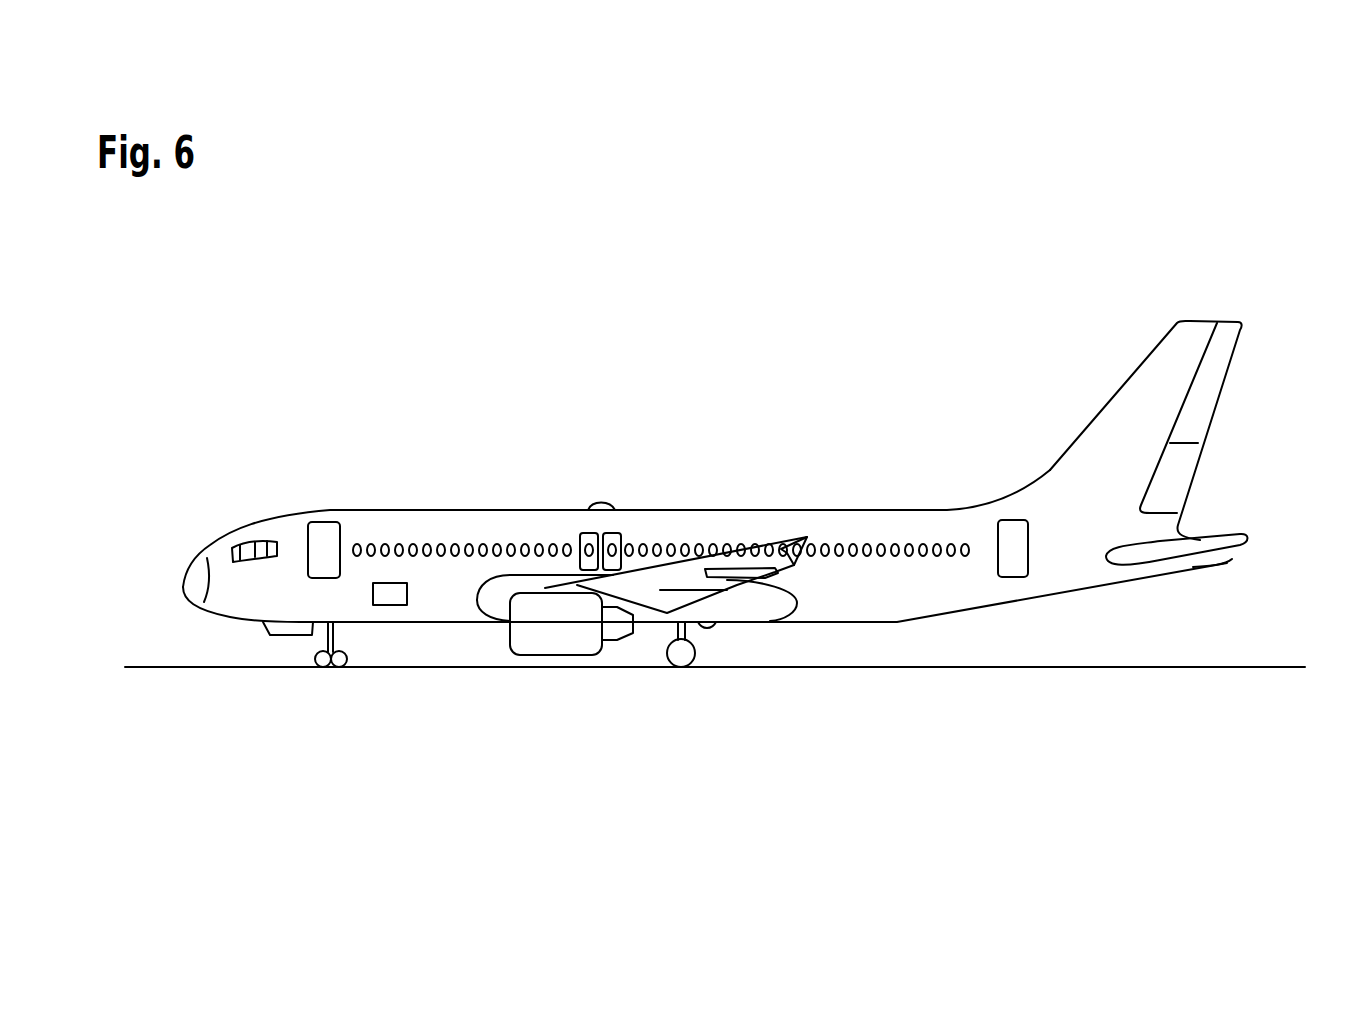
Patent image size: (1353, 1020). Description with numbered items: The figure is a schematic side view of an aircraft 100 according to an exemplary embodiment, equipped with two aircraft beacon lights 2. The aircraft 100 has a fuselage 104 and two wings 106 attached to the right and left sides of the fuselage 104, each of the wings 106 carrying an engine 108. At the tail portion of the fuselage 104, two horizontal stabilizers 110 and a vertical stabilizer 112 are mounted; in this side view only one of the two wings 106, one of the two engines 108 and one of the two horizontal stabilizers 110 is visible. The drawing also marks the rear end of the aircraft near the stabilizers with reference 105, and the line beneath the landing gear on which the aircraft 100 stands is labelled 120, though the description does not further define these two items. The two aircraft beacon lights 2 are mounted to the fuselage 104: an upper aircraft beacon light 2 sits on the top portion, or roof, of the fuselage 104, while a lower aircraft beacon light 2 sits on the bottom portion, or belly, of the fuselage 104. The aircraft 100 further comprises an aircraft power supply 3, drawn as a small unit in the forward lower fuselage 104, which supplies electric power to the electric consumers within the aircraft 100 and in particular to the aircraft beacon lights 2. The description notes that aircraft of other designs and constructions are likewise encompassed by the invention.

The aircraft 100 is at (744, 498).
The aircraft beacon light 2 is at (608, 500).
The aircraft power supply 3 is at (393, 606).
The fuselage 104 is at (873, 530).
The tail section 105 is at (1232, 561).
The wing 106 is at (693, 578).
The engine 108 is at (555, 628).
The horizontal stabilizer 110 is at (1207, 545).
The vertical stabilizer 112 is at (1175, 360).
The ground 120 is at (993, 668).